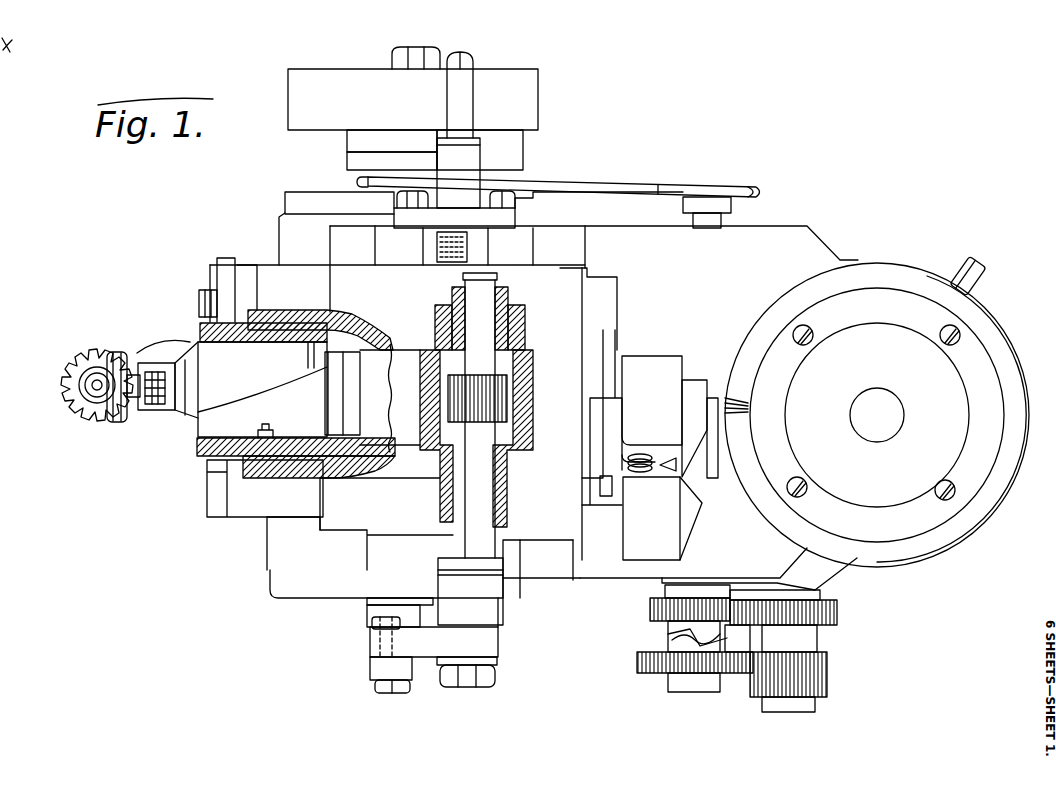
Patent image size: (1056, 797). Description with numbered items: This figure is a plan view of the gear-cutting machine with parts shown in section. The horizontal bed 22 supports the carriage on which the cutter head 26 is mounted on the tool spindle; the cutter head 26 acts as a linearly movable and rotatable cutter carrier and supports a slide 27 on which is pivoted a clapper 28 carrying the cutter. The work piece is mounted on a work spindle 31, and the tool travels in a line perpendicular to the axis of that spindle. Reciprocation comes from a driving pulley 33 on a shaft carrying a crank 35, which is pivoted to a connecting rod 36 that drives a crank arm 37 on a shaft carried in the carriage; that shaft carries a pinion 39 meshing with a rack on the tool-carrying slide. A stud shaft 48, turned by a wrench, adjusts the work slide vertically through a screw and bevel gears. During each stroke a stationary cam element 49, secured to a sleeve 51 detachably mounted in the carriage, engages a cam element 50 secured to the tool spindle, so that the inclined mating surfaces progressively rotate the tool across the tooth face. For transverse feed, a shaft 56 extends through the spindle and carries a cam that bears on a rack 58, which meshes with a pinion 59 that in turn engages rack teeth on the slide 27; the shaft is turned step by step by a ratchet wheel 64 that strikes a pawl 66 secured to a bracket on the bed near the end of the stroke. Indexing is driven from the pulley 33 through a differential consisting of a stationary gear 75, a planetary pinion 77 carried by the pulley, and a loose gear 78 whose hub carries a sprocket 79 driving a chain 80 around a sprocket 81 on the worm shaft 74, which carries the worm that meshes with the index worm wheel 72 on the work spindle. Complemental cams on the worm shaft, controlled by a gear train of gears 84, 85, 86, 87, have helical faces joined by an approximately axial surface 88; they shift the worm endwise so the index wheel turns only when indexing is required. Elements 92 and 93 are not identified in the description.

The horizontal bed 22 is at (272, 275).
The cutter head 26 is at (648, 357).
The slide 27 is at (700, 380).
The clapper 28 is at (700, 478).
The work spindle 31 is at (903, 412).
The driving pulley 33 is at (538, 98).
The crank 35 is at (370, 628).
The connecting rod 36 is at (370, 665).
The crank arm 37 is at (433, 665).
The pinion 39 is at (957, 520).
The stud shaft 48 is at (968, 262).
The stationary cam element 49 is at (228, 416).
The cam element 50 is at (200, 322).
The sleeve 51 is at (200, 458).
The shaft 56 is at (600, 488).
The rack 58 is at (510, 484).
The pinion 59 is at (512, 385).
The ratchet wheel 64 is at (70, 372).
The pawl 66 is at (145, 352).
The index worm wheel 72 is at (1027, 457).
The worm shaft 74 is at (725, 220).
The gear 75 is at (347, 140).
The planetary pinion 77 is at (523, 150).
The gear 78 is at (347, 161).
The sprocket 79 is at (357, 184).
The chain 80 is at (630, 186).
The sprocket 81 is at (736, 173).
The gear 84 is at (637, 665).
The gear 85 is at (828, 675).
The gear 86 is at (837, 612).
The gear 87 is at (650, 608).
The axial surface 88 is at (740, 636).
The pawl 92 is at (668, 640).
The spring 93 is at (670, 636).